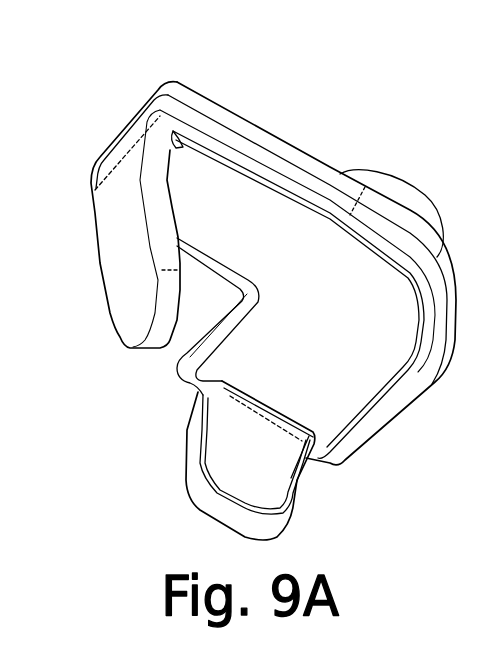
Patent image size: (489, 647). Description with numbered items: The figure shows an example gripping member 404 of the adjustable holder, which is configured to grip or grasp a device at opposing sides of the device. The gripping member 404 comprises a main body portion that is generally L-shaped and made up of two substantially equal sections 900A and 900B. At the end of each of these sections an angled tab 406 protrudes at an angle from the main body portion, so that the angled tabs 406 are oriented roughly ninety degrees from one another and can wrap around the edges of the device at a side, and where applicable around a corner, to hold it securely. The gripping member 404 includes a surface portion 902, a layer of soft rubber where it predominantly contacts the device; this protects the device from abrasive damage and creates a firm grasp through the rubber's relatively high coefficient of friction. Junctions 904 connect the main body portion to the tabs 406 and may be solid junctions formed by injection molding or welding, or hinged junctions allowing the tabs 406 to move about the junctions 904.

The gripping member 404 is at (156, 50).
The angled tabs 406 is at (194, 494).
The substantially equal section 900A is at (488, 221).
The substantially equal section 900B is at (324, 506).
The surface portion 902 is at (335, 321).
The junctions 904 is at (128, 140).